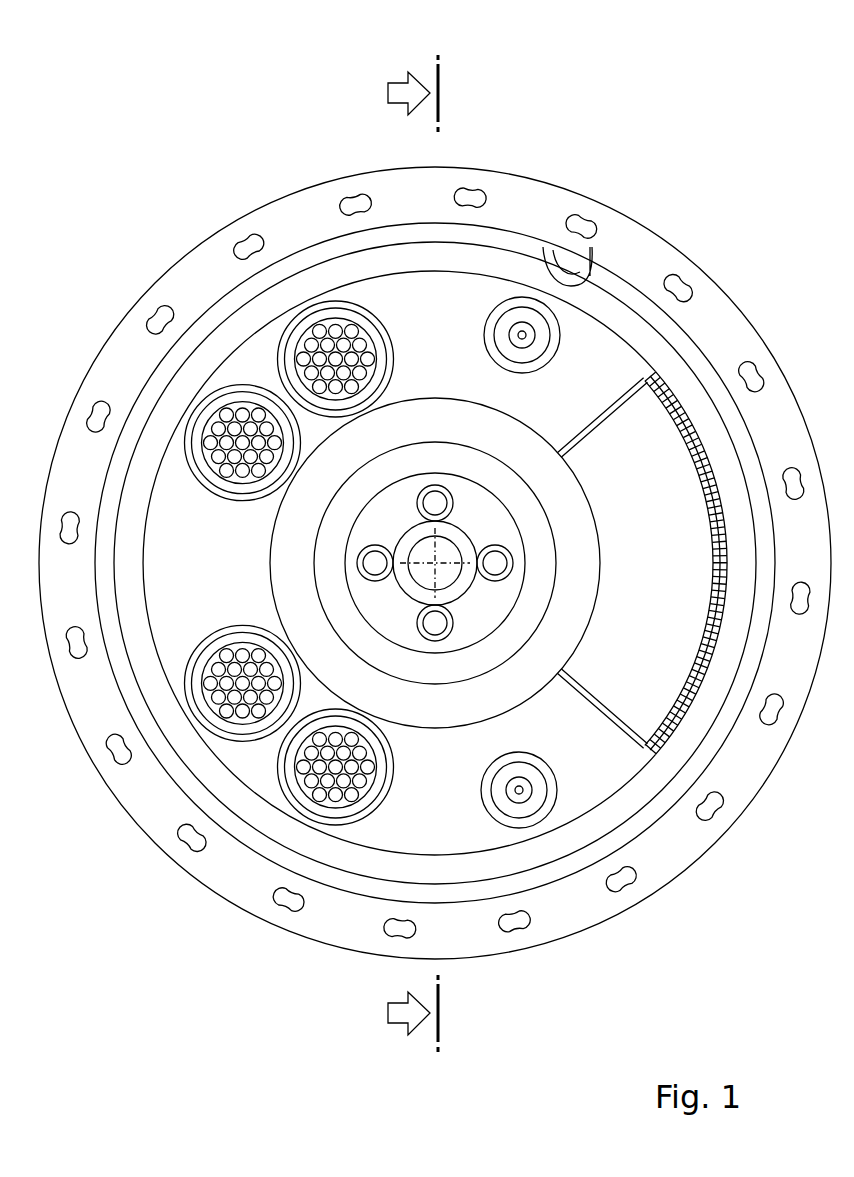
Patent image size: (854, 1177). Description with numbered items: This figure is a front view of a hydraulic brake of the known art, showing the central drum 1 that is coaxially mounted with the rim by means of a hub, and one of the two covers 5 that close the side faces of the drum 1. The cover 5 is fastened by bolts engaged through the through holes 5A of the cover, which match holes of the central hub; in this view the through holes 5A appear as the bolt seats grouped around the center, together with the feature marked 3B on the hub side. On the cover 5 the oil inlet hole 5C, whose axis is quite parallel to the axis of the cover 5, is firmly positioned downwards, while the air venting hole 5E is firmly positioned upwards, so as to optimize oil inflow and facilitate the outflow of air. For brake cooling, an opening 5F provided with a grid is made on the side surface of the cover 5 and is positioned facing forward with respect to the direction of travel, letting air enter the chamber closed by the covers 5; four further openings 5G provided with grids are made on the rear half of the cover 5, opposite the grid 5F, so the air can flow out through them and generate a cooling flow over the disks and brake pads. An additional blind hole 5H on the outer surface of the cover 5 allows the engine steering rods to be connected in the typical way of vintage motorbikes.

The central drum 1 is at (134, 285).
The cover 5 is at (229, 299).
The through holes 5A is at (441, 502).
The hub bolt boss 3B is at (435, 563).
The oil inlet hole 5C is at (528, 785).
The air venting hole 5E is at (590, 249).
The opening provided with a grid 5F is at (707, 603).
The openings provided with grids 5G is at (228, 682).
The blind hole 5H is at (522, 335).